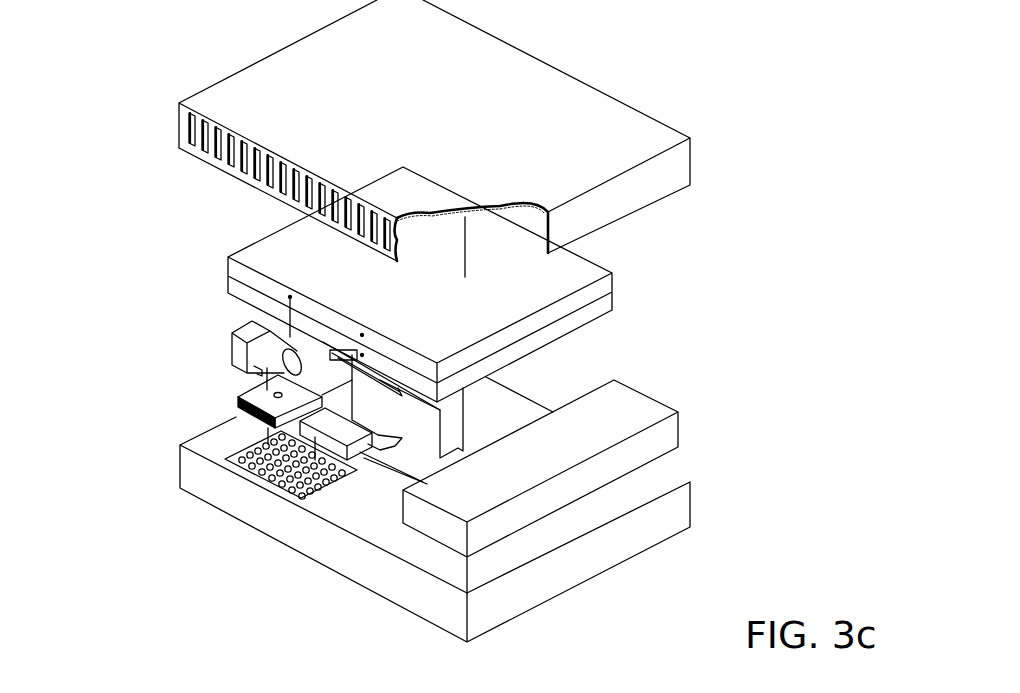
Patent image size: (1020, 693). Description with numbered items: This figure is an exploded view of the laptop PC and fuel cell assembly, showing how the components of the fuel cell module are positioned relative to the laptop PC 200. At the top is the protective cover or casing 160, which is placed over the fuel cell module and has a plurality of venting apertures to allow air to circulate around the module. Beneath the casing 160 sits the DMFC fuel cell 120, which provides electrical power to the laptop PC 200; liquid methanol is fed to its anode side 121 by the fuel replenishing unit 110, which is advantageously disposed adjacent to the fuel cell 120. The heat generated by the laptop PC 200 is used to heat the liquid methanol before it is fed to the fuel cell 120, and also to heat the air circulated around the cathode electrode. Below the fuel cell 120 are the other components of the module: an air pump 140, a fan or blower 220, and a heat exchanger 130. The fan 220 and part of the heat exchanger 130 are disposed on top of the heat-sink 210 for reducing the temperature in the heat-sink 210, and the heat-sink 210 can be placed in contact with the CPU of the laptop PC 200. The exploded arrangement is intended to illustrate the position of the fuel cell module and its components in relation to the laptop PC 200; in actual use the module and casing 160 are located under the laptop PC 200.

The protective cover or casing 160 is at (253, 123).
The DMFC fuel cell 120 is at (577, 272).
The anode side 121 is at (278, 325).
The air pump 140 is at (238, 355).
The fan or blower 220 is at (240, 400).
The heat exchanger 130 is at (272, 434).
The heat-sink 210 is at (280, 434).
The fuel replenishing unit 110 is at (633, 401).
The laptop or notebook PC 200 is at (662, 505).